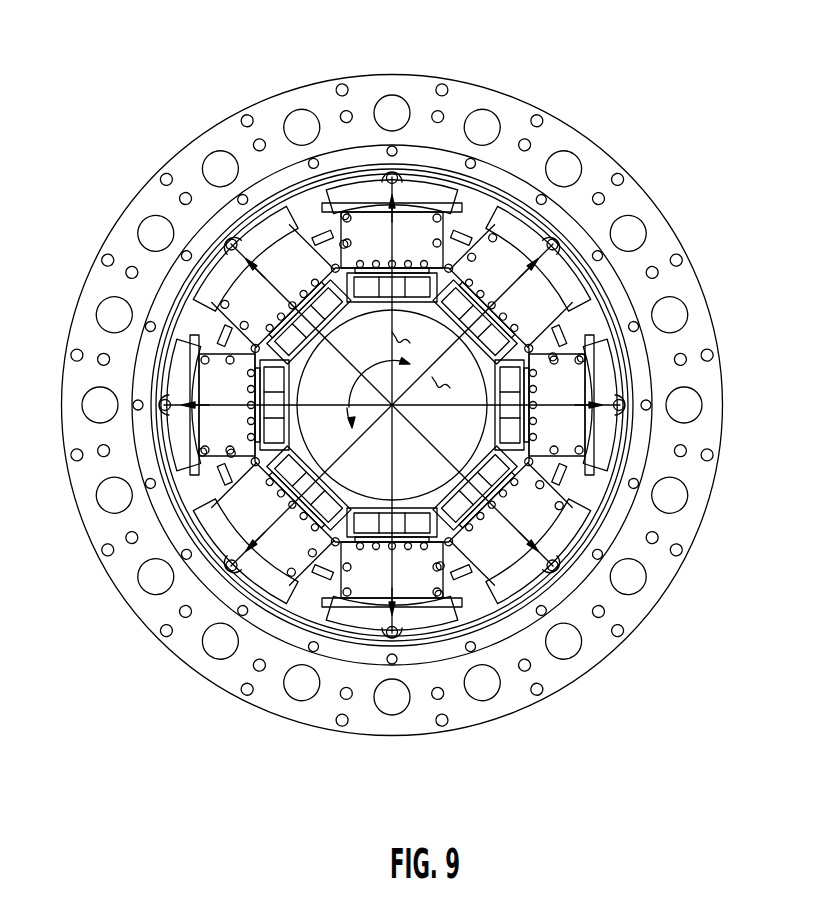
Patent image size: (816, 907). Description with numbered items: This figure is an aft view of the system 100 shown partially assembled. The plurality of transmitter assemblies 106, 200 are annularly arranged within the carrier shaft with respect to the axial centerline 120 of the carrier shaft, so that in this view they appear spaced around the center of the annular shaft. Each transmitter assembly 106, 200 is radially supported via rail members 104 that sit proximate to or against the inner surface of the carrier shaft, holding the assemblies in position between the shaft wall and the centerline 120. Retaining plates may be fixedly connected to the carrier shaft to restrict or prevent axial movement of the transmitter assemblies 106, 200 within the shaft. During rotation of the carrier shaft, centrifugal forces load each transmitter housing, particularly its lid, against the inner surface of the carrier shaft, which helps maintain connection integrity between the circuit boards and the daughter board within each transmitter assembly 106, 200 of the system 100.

The system 100 is at (648, 68).
The rail members 104 is at (322, 203).
The transmitter assemblies 106 is at (420, 214).
The axial centerline 120 is at (412, 412).
The transmitter assembly 200 is at (408, 202).